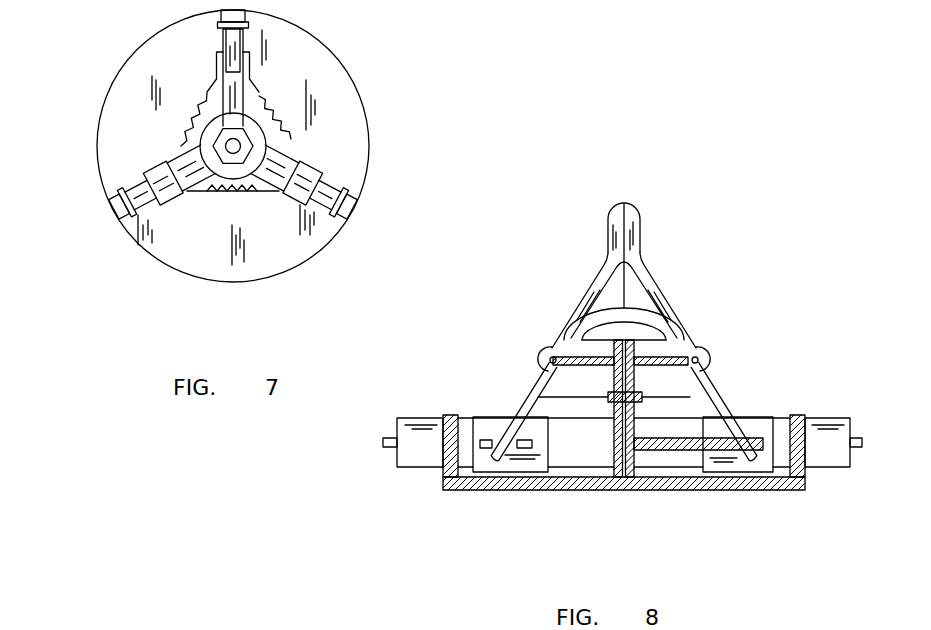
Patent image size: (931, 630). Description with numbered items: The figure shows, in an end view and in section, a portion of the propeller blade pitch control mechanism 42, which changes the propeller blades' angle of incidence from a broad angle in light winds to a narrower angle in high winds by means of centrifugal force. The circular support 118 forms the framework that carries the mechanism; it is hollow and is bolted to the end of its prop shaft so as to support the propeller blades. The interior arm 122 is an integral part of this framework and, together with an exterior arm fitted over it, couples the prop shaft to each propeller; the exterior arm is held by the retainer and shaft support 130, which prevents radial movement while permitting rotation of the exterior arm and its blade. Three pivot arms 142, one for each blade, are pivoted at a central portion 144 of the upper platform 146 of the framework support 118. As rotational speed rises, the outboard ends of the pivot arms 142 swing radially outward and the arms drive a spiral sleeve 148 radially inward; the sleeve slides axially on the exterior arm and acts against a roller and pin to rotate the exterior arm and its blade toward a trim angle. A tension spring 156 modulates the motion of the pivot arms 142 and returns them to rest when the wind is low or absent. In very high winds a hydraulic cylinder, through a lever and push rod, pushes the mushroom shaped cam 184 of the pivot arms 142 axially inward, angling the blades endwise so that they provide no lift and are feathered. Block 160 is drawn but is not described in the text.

In FIG. 7, the propeller blade pitch control mechanism 42 is at (140, 243).
In FIG. 8, the propeller blade pitch control mechanism 42 is at (591, 283).
In FIG. 7, the circular support 118 is at (283, 275).
In FIG. 8, the circular support 118 is at (497, 491).
In FIG. 8, the interior arm 122 is at (655, 447).
In FIG. 7, the retainer and shaft support 130 is at (354, 181).
In FIG. 7, the pivot arm 142 is at (252, 97).
In FIG. 8, the pivot arm 142 is at (665, 297).
In FIG. 8, the central portion 144 is at (540, 356).
In FIG. 8, the upper platform 146 is at (587, 353).
In FIG. 8, the spiral sleeve 148 is at (550, 437).
In FIG. 7, the tension spring 156 is at (188, 126).
In FIG. 8, the tension spring 156 is at (608, 396).
In FIG. 7, the jaw block 160 is at (311, 163).
In FIG. 8, the jaw block 160 is at (525, 412).
In FIG. 7, the mushroom shaped cam 184 is at (220, 78).
In FIG. 8, the mushroom shaped cam 184 is at (643, 332).